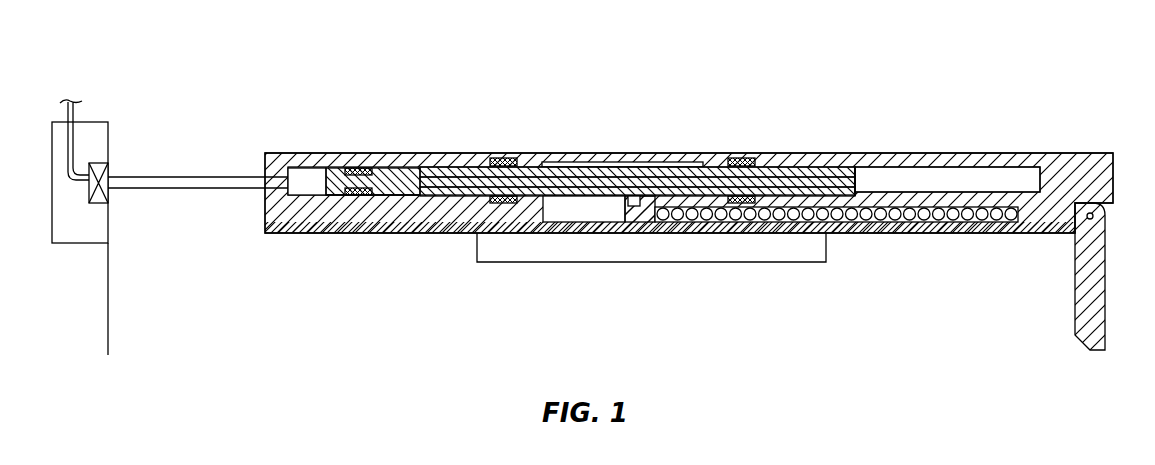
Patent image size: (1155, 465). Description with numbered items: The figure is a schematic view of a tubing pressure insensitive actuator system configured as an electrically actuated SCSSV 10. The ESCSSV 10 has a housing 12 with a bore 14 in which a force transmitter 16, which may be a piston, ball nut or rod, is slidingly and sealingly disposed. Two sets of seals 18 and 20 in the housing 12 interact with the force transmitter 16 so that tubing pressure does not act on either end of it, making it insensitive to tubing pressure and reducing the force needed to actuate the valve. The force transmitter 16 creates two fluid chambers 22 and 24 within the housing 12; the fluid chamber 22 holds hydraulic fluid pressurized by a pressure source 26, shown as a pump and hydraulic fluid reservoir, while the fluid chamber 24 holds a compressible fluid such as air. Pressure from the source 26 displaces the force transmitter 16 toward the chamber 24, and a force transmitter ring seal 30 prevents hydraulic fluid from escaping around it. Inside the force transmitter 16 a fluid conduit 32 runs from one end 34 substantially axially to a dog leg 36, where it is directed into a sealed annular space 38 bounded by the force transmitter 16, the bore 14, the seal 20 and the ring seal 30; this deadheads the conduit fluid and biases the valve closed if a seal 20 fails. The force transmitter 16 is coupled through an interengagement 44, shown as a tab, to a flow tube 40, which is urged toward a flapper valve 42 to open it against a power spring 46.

The electrically actuated SCSSV 10 is at (866, 46).
The housing 12 is at (1079, 157).
The bore 14 is at (917, 170).
The force transmitter 16 is at (800, 176).
The seals 18 is at (742, 163).
The seals 20 is at (500, 163).
The fluid chamber 22 is at (306, 179).
The fluid chamber 24 is at (1006, 179).
The pressure source 26 is at (127, 135).
The force transmitter ring seal 30 is at (360, 172).
The fluid conduit 32 is at (568, 166).
The end 34 is at (852, 180).
The dog leg 36 is at (437, 181).
The annular space 38 is at (398, 195).
The flow tube 40 is at (652, 219).
The flapper valve 42 is at (1088, 286).
The interengagement 44 is at (634, 197).
The power spring 46 is at (712, 217).